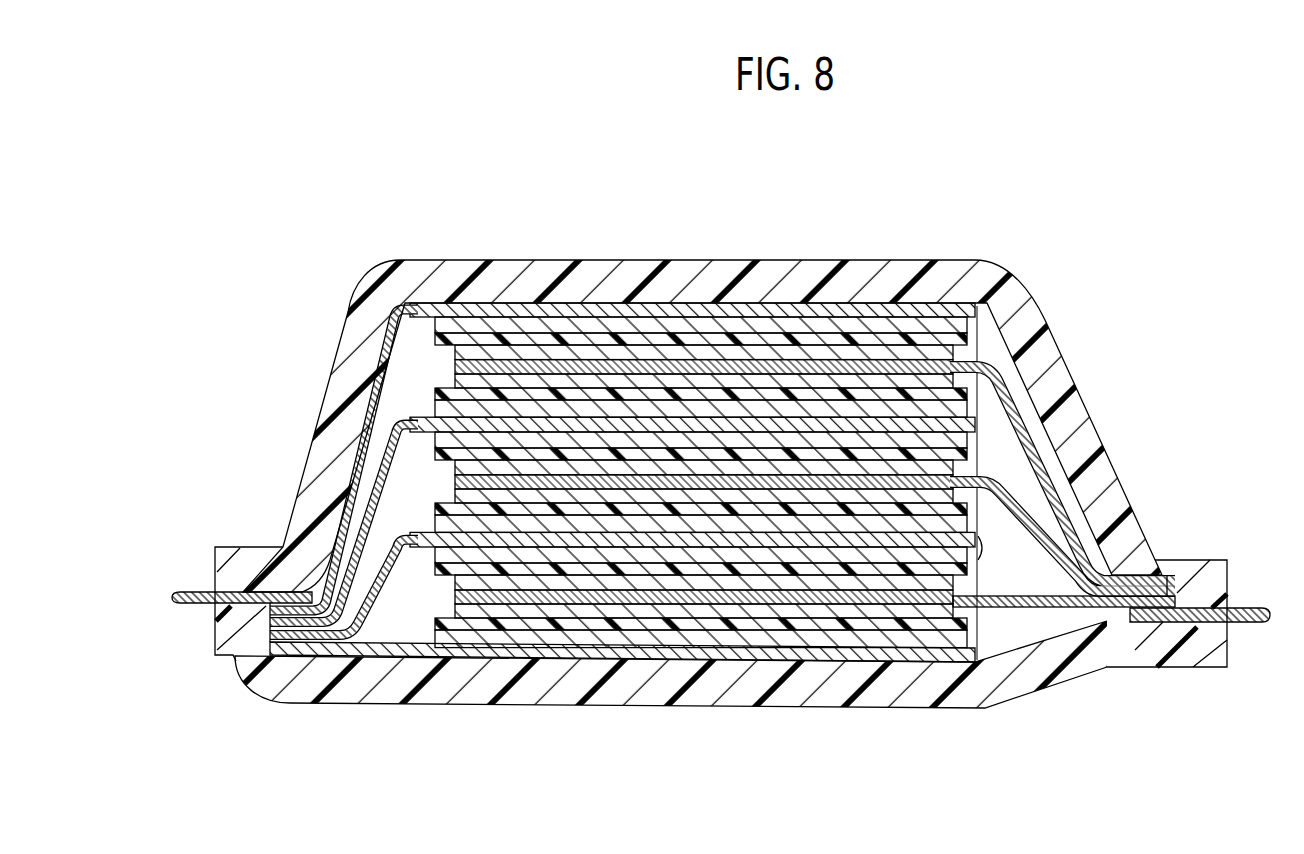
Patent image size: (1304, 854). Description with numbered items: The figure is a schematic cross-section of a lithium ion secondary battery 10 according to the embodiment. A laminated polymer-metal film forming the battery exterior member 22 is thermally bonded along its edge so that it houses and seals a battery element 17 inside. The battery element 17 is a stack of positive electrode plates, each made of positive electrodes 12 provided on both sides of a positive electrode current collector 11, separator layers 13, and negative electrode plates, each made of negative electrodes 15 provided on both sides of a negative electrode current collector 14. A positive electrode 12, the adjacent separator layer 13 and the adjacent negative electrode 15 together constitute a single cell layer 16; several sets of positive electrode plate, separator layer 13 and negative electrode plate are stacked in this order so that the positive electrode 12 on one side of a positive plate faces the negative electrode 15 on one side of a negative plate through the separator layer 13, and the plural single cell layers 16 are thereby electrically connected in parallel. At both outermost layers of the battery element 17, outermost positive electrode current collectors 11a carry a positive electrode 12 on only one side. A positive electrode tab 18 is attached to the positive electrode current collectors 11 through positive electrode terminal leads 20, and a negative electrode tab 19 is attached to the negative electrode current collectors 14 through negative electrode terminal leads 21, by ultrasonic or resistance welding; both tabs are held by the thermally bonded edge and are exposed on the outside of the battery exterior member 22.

The lithium ion secondary battery 10 is at (306, 234).
The positive electrode current collector 11 is at (747, 428).
The outermost positive electrode current collector 11a is at (860, 312).
The positive electrode 12 is at (500, 325).
The separator layer 13 is at (553, 338).
The negative electrode current collector 14 is at (655, 372).
The negative electrode 15 is at (596, 355).
The single cell layer 16 is at (701, 396).
The battery element 17 is at (998, 483).
The positive electrode tab 18 is at (183, 583).
The negative electrode tab 19 is at (1245, 604).
The positive electrode terminal lead 20 is at (385, 364).
The negative electrode terminal lead 21 is at (1003, 397).
The battery exterior member 22 is at (1207, 560).